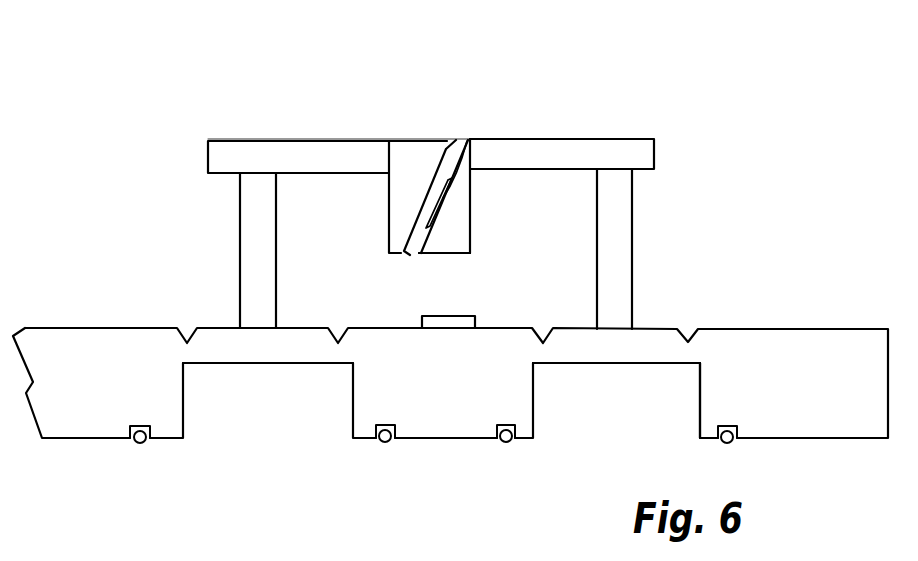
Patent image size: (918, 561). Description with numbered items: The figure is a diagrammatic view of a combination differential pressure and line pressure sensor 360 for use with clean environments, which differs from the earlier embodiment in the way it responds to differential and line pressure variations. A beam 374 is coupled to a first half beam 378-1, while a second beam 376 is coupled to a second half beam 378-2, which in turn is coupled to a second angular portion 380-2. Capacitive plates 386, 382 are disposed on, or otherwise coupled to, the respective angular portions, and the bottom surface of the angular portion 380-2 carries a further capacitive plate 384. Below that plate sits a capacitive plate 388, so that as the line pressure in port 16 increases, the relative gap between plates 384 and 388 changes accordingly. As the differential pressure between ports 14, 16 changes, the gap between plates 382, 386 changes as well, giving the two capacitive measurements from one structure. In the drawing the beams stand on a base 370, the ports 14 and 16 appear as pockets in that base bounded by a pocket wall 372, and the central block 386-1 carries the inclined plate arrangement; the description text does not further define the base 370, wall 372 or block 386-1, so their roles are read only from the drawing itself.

The sensor 360 is at (686, 127).
The base 370 is at (300, 365).
The pocket wall 372 is at (680, 365).
The beam 374 is at (240, 265).
The second beam 376 is at (632, 270).
The first half beam 378-1 is at (285, 141).
The second half beam 378-2 is at (603, 139).
The second angular portion 380-2 is at (472, 205).
The capacitive plate 382 is at (473, 140).
The capacitive plate 384 is at (472, 253).
The capacitive plate 386 is at (456, 141).
The central block 386-1 is at (406, 141).
The capacitive plate 388 is at (478, 316).
The port 14 is at (277, 431).
The port 16 is at (627, 433).